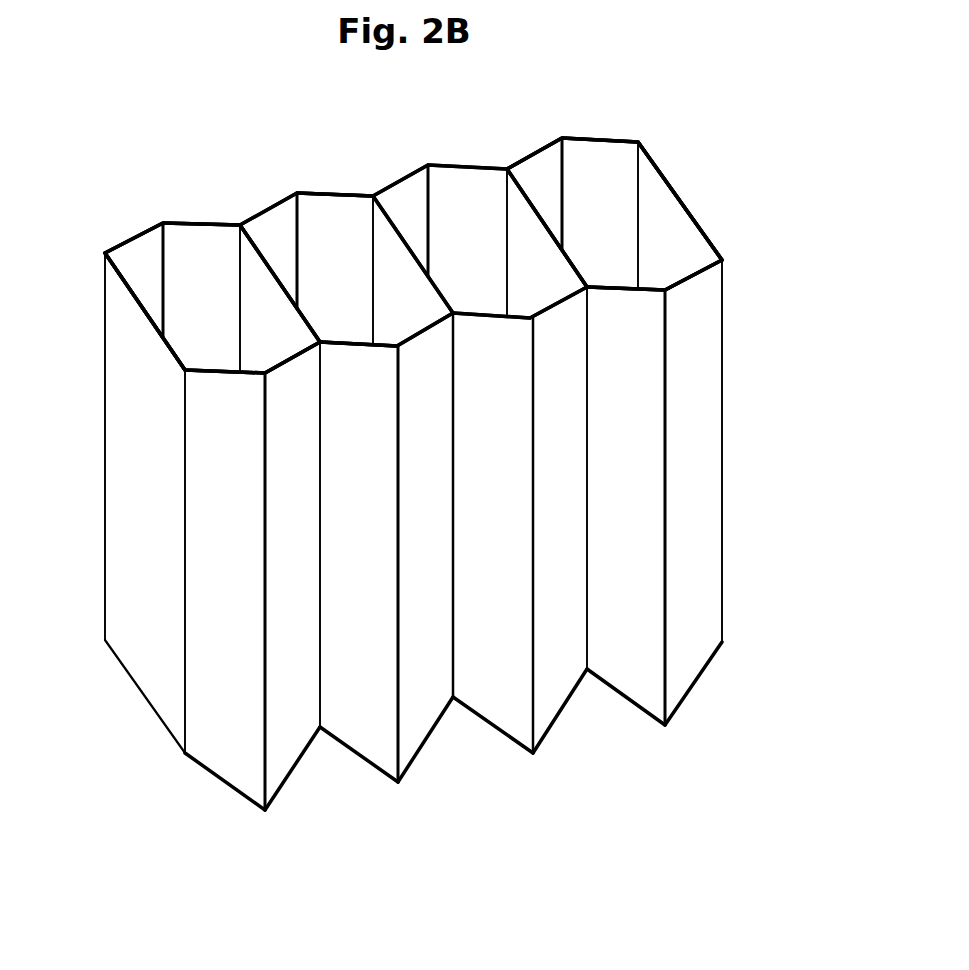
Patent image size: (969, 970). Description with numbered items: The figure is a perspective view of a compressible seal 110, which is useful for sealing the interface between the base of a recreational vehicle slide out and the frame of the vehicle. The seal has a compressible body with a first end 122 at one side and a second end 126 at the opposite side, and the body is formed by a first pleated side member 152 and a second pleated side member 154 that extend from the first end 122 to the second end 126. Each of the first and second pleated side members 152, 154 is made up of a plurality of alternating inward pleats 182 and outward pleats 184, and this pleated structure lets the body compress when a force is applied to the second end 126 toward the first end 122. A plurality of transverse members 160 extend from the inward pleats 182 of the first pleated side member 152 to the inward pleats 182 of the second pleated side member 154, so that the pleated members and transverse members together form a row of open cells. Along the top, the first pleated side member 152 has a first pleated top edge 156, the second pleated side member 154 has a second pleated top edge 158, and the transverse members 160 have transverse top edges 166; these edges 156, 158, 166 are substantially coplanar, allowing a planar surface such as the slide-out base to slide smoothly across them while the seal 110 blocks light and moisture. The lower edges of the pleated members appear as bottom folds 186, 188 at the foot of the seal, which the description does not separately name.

The compressible seal 110 is at (100, 183).
The first end 122 is at (92, 270).
The second end 126 is at (737, 224).
The first pleated side member 152 is at (358, 269).
The second pleated side member 154 is at (380, 547).
The first pleated top edge 156 is at (323, 192).
The second pleated top edge 158 is at (350, 348).
The transverse member 160 is at (283, 288).
The transverse top edge 166 is at (125, 270).
The inward pleat 182 is at (105, 253).
The outward pleat 184 is at (163, 223).
The upper bottom edge 186 is at (185, 757).
The lower bottom edge 188 is at (265, 811).